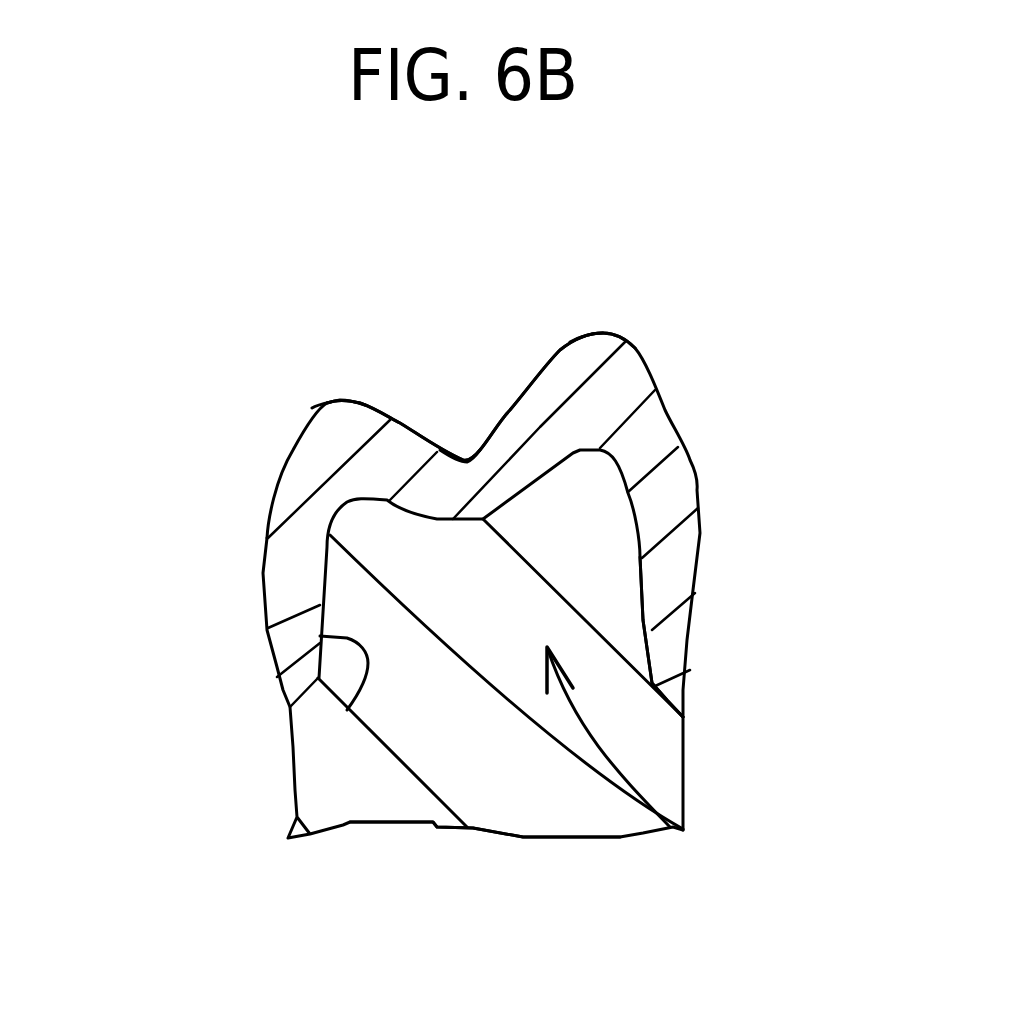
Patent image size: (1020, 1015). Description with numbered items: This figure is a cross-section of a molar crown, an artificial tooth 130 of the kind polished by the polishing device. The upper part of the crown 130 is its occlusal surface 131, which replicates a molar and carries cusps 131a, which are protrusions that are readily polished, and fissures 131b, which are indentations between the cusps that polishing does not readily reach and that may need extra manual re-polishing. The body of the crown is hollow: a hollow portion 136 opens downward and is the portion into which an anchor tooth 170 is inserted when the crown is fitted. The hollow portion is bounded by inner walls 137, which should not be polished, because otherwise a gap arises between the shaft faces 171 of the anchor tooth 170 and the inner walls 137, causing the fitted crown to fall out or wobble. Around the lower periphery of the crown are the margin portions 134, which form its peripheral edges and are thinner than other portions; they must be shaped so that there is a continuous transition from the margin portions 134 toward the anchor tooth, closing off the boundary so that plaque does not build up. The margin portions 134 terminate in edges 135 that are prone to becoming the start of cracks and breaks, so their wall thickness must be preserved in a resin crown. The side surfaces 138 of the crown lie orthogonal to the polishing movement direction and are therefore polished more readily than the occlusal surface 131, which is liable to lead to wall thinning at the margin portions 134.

The artificial tooth 130 is at (700, 478).
The occlusal surface 131 is at (463, 320).
The cusp 131a is at (330, 398).
The fissure 131b is at (467, 458).
The margin portion 134 is at (717, 552).
The edge 135 is at (683, 717).
The hollow portion 136 is at (683, 830).
The inner wall 137 is at (347, 710).
The side surface 138 is at (265, 580).
The anchor tooth 170 is at (468, 752).
The shaft face 171 is at (266, 626).